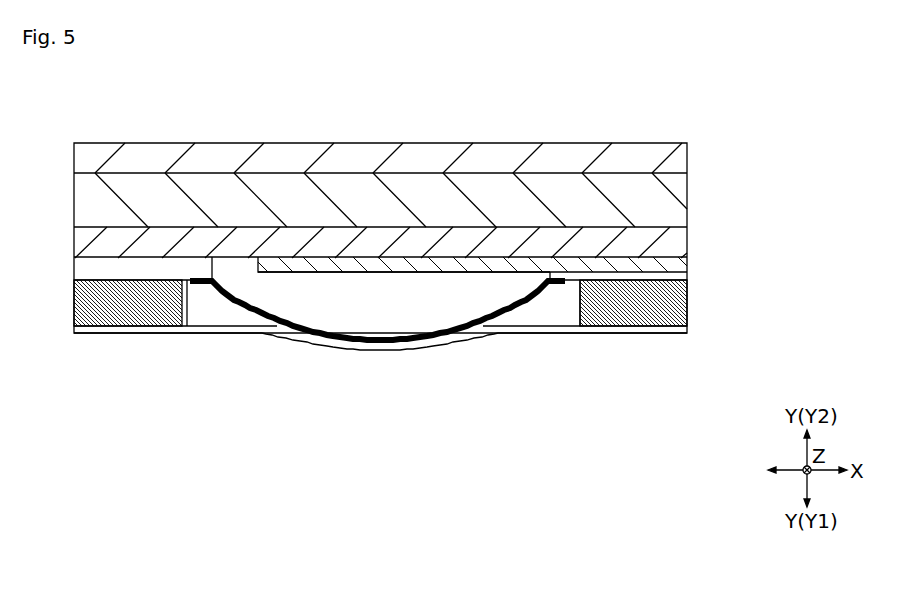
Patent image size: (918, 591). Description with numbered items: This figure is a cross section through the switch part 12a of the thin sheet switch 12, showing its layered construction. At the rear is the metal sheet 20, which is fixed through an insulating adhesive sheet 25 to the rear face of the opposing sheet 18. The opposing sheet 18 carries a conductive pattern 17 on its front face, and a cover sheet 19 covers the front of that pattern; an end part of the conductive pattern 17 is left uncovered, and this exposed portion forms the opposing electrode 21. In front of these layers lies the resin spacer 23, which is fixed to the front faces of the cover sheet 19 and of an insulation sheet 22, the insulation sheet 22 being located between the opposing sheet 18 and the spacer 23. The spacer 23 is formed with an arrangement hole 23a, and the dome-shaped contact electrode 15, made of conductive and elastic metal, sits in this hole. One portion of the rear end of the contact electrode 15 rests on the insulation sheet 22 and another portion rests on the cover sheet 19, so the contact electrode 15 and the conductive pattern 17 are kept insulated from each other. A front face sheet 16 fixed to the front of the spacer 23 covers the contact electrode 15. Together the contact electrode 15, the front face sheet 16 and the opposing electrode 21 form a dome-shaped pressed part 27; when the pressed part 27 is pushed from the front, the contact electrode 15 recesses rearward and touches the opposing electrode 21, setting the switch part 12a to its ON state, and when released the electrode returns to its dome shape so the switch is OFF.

The sheet switch 12 is at (649, 111).
The switch part 12a is at (102, 380).
The contact electrode 15 is at (516, 320).
The front face sheet 16 is at (236, 334).
The conductive pattern 17 is at (688, 266).
The opposing sheet 18 is at (688, 243).
The cover sheet 19 is at (688, 277).
The metal sheet 20 is at (305, 143).
The opposing electrode 21 is at (380, 273).
The insulation sheet 22 is at (187, 327).
The spacer 23 is at (688, 313).
The arrangement hole 23a is at (582, 310).
The adhesive sheet 25 is at (688, 195).
The pressed part 27 is at (325, 398).